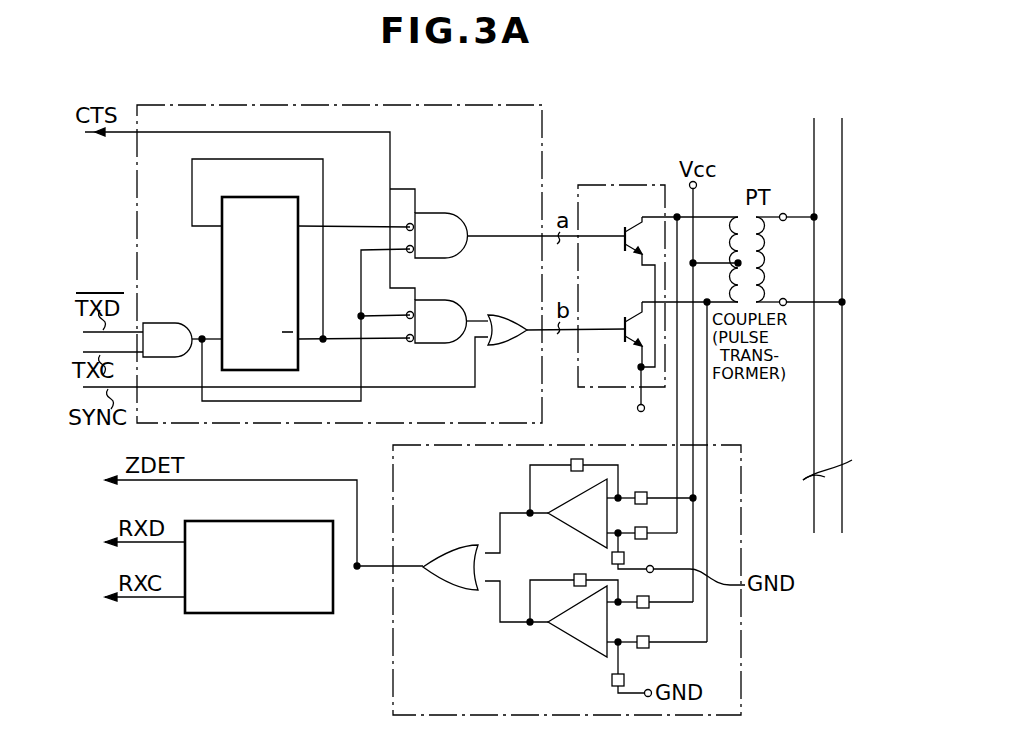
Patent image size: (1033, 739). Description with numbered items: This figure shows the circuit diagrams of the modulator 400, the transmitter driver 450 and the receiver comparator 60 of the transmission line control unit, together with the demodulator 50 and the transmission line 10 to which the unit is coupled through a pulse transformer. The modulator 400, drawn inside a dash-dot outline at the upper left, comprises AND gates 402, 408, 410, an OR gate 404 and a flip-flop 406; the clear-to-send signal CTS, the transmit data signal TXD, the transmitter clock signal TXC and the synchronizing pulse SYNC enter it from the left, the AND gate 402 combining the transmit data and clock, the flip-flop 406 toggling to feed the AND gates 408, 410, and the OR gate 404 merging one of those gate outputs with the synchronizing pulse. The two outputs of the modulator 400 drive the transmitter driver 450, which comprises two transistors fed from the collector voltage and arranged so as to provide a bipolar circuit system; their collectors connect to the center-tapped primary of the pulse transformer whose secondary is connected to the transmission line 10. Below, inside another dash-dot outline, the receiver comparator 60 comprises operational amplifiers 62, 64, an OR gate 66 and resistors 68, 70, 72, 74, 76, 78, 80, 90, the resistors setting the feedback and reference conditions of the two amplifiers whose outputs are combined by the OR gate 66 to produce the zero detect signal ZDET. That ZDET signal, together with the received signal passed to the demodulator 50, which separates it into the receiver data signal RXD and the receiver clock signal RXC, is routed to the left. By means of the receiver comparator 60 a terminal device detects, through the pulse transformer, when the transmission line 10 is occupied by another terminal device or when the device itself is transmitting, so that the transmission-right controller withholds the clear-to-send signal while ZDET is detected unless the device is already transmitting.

The modulator 400 is at (283, 105).
The AND gate 402 is at (178, 322).
The OR gate 404 is at (508, 312).
The flip-flop 406 is at (222, 258).
The AND gate 408 is at (449, 212).
The AND gate 410 is at (447, 300).
The transmitter driver 450 is at (598, 185).
The transmission line 10 is at (808, 477).
The demodulator 50 is at (278, 614).
The receiver comparator 60 is at (393, 690).
The operational amplifier 62 is at (565, 542).
The operational amplifier 64 is at (572, 648).
The OR gate 66 is at (451, 551).
The resistor 68 is at (577, 458).
The resistor 70 is at (639, 491).
The resistor 72 is at (641, 540).
The resistor 74 is at (611, 559).
The resistor 76 is at (574, 583).
The resistor 78 is at (648, 609).
The resistor 80 is at (648, 649).
The resistor 90 is at (613, 686).